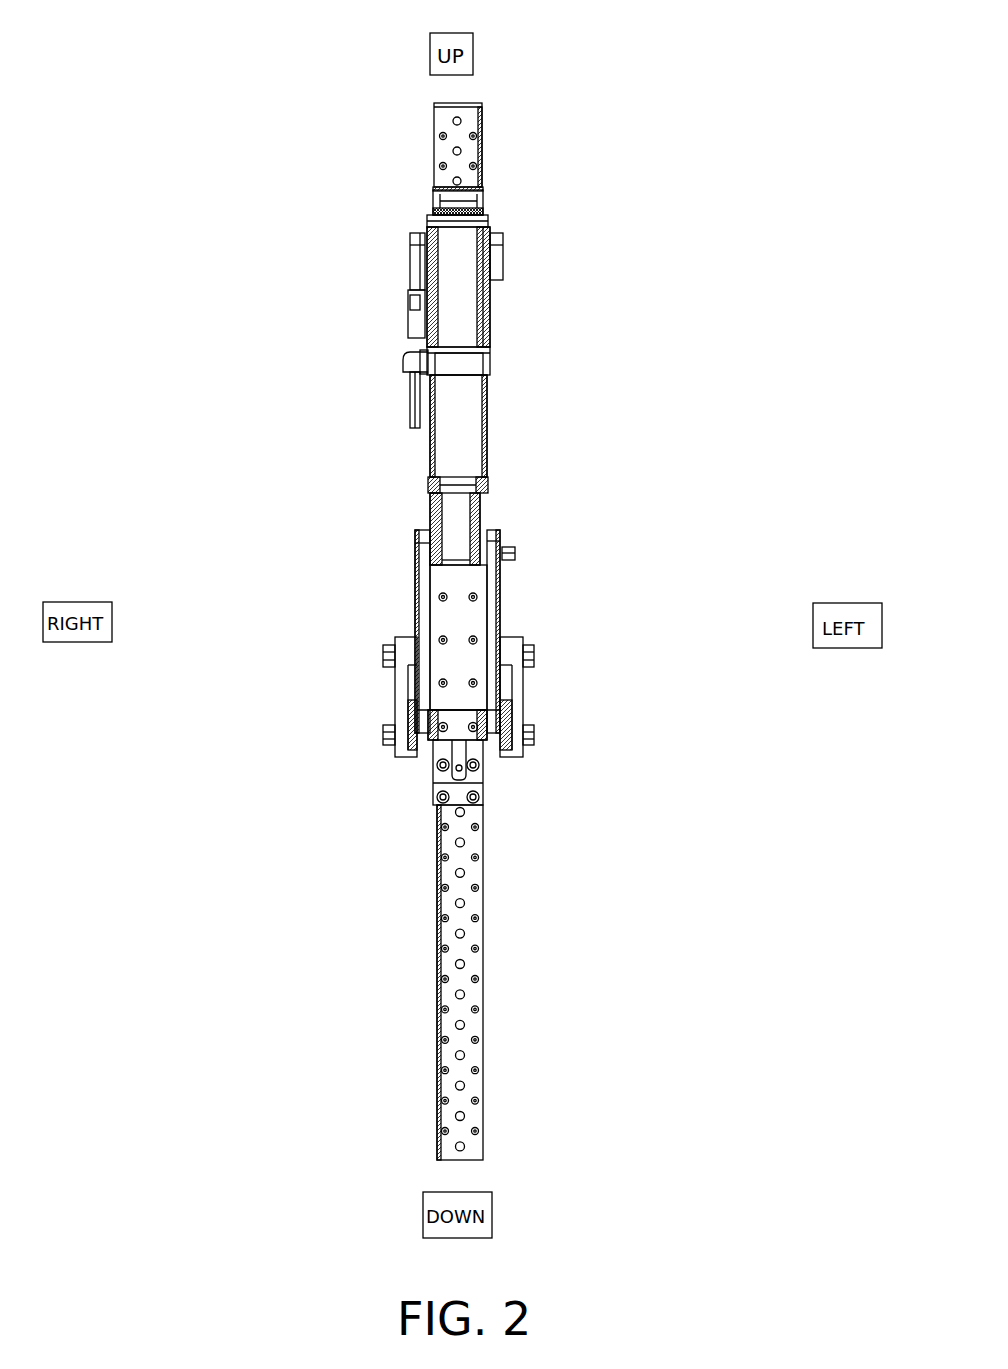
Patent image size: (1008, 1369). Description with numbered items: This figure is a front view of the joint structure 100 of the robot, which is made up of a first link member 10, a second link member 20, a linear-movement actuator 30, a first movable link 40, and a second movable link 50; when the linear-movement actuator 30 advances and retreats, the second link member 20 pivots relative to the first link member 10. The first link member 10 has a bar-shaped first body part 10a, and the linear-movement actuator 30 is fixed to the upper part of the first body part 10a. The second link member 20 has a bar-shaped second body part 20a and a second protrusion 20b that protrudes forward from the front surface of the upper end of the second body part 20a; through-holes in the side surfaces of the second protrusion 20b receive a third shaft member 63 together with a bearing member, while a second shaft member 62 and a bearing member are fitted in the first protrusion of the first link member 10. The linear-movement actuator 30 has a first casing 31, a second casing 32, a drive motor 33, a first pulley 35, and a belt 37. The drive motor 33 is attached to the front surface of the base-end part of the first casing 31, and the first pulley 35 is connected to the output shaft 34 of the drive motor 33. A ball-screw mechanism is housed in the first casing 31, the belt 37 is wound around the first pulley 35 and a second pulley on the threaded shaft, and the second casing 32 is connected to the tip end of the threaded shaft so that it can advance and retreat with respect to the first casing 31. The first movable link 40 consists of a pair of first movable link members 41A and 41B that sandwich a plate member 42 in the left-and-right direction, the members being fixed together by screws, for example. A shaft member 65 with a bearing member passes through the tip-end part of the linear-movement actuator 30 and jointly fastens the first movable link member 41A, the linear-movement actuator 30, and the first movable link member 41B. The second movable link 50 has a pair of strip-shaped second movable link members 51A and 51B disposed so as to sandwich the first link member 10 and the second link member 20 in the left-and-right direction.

The joint structure 100 is at (472, 23).
The first link member 10 is at (458, 135).
The first body part 10a is at (436, 141).
The second link member 20 is at (544, 950).
The second body part 20a is at (473, 1024).
The second protrusion 20b is at (485, 789).
The linear-movement actuator 30 is at (478, 327).
The first casing 31 is at (472, 436).
The second casing 32 is at (483, 511).
The drive motor 33 is at (412, 289).
The output shaft 34 is at (478, 226).
The first pulley 35 is at (467, 199).
The belt 37 is at (434, 197).
The first movable link 40 is at (464, 635).
The first movable link member 41A is at (500, 618).
The first movable link member 41B is at (417, 588).
The plate member 42 is at (440, 617).
The second movable link 50 is at (467, 697).
The second movable link member 51A is at (525, 700).
The second movable link member 51B is at (398, 695).
The second shaft member 62 is at (535, 655).
The third shaft member 63 is at (525, 739).
The shaft member 65 is at (587, 558).